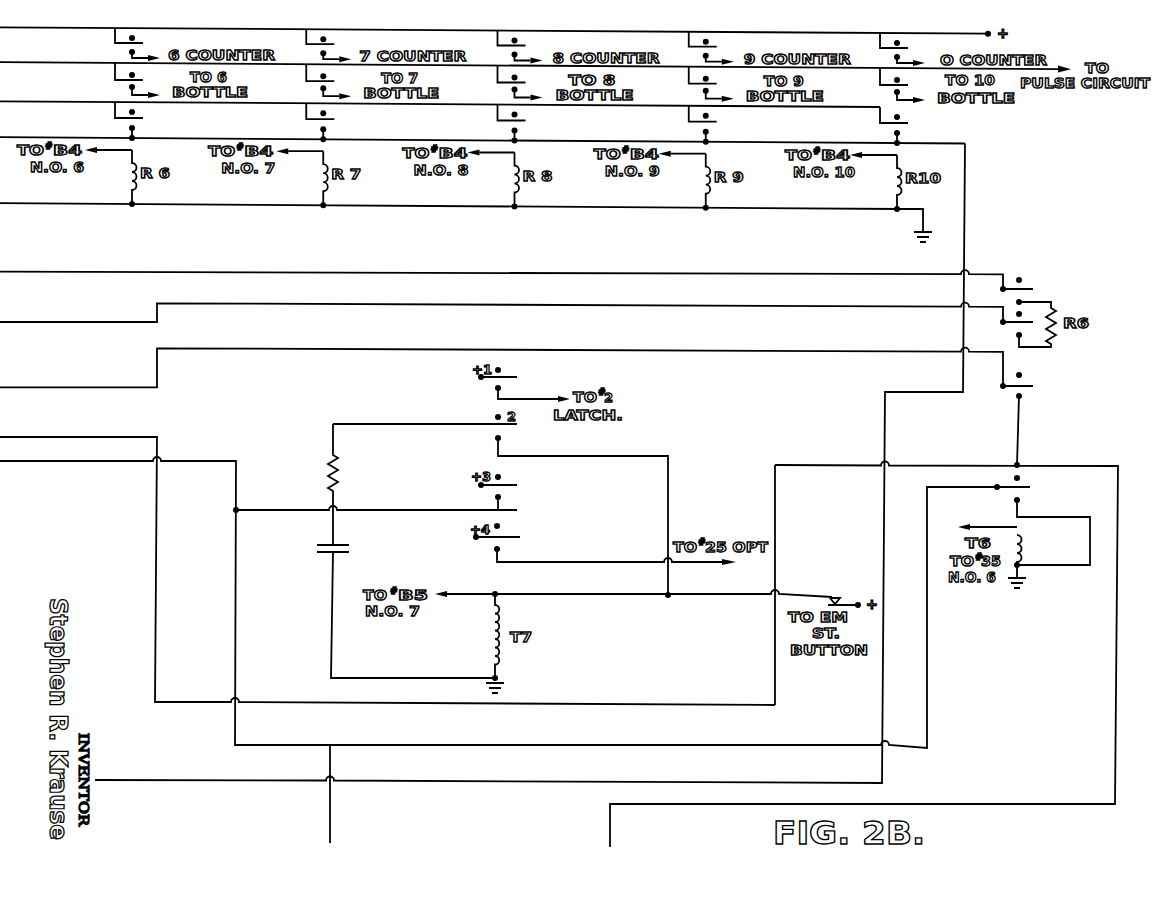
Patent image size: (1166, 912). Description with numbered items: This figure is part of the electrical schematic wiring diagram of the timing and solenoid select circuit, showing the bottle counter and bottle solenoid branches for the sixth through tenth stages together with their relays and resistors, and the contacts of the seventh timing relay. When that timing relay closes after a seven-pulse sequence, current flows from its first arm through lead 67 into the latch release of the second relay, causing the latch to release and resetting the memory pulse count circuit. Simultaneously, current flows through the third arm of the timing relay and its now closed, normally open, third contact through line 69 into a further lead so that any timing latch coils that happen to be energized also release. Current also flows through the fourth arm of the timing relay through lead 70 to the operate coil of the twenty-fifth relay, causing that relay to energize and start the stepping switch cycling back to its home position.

The lead 67 is at (520, 399).
The line 69 is at (427, 511).
The lead 70 is at (557, 562).